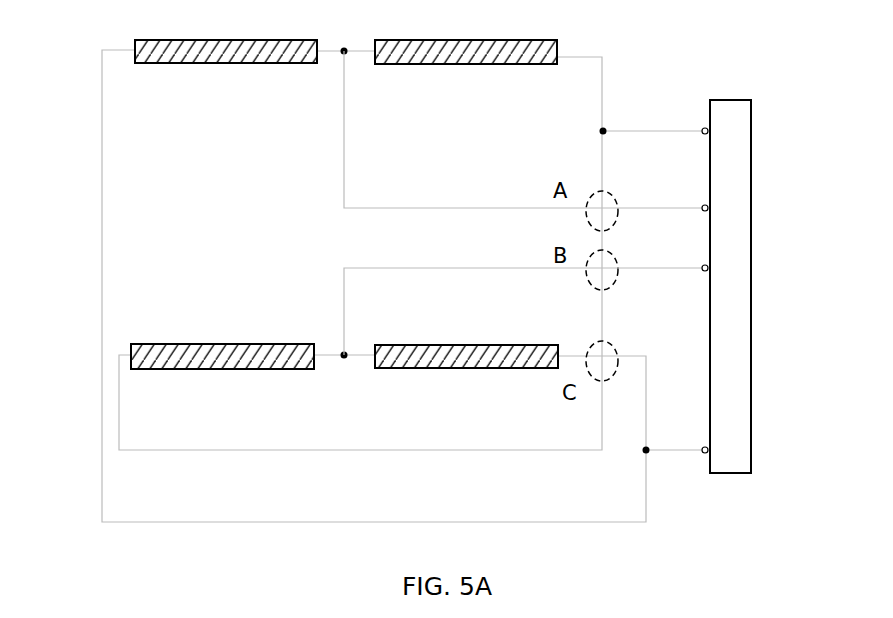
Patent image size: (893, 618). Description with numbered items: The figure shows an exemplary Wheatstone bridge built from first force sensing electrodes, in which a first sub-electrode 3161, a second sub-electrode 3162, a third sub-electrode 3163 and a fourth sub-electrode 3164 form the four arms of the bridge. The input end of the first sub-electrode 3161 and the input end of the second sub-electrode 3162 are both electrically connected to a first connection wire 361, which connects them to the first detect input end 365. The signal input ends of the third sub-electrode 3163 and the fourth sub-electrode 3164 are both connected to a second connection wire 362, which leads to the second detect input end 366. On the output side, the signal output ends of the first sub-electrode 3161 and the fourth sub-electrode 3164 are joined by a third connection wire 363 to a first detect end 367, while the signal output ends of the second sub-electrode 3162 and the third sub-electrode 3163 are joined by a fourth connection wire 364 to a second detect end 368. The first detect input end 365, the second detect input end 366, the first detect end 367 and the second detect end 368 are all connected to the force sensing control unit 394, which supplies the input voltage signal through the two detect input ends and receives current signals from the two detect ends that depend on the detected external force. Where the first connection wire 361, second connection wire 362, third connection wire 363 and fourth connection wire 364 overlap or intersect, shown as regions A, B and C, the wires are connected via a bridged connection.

The first sub-electrode 3161 is at (167, 53).
The fourth sub-electrode 3164 is at (527, 55).
The third sub-electrode 3163 is at (157, 354).
The second sub-electrode 3162 is at (544, 359).
The first connection wire 361 is at (672, 452).
The second connection wire 362 is at (631, 131).
The third connection wire 363 is at (345, 152).
The fourth connection wire 364 is at (393, 273).
The first detect input end 365 is at (708, 449).
The second detect input end 366 is at (707, 130).
The first detect end 367 is at (707, 207).
The second detect end 368 is at (707, 267).
The force sensing control unit 394 is at (733, 350).